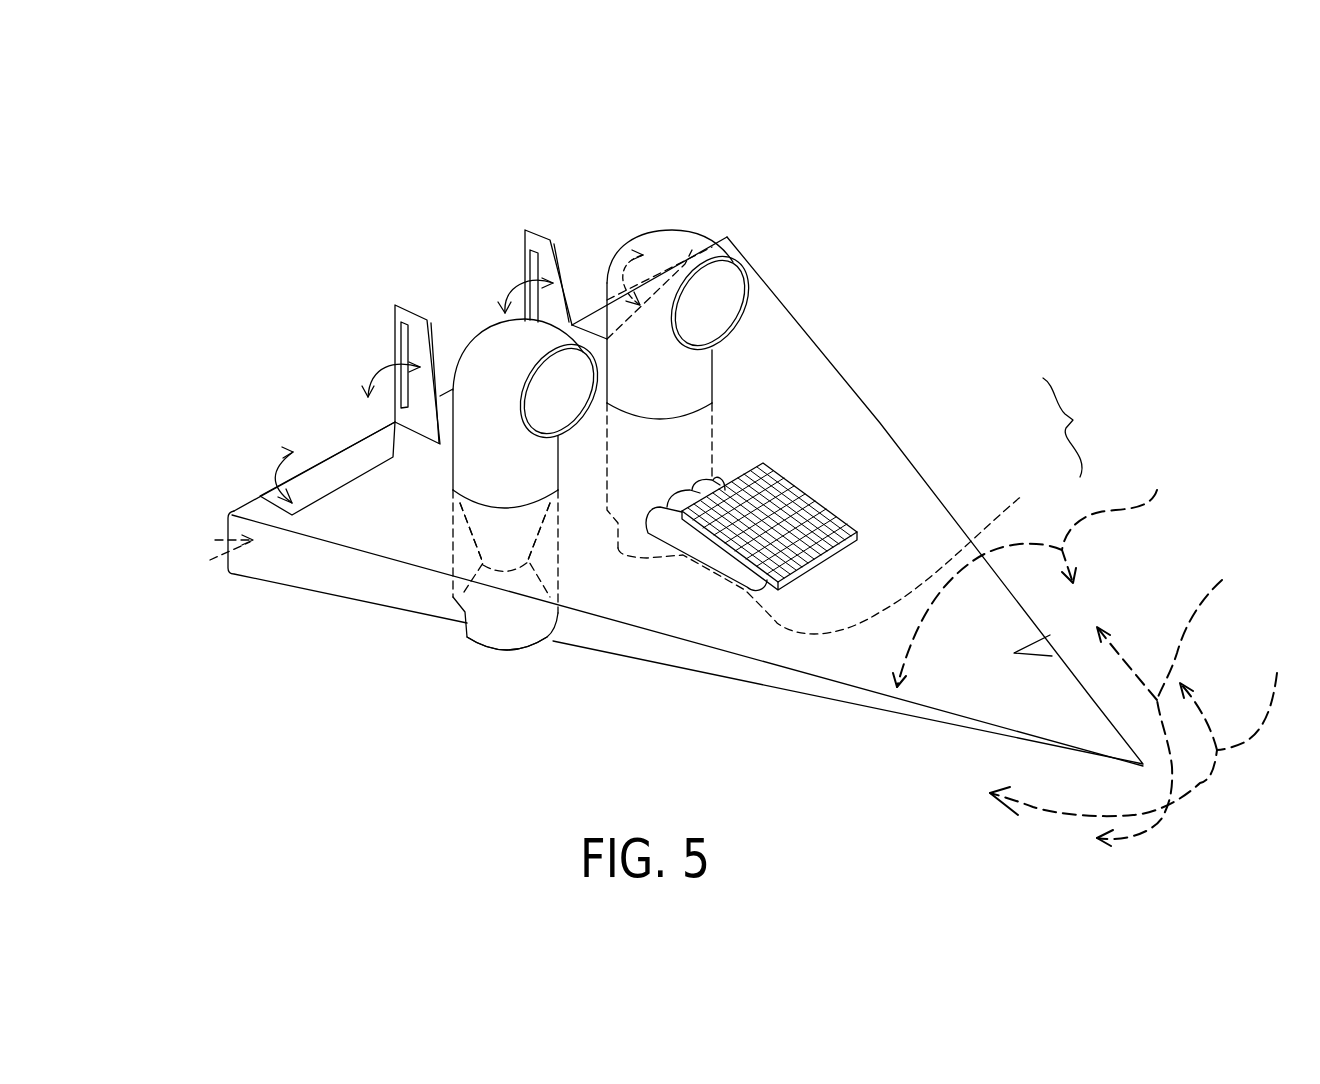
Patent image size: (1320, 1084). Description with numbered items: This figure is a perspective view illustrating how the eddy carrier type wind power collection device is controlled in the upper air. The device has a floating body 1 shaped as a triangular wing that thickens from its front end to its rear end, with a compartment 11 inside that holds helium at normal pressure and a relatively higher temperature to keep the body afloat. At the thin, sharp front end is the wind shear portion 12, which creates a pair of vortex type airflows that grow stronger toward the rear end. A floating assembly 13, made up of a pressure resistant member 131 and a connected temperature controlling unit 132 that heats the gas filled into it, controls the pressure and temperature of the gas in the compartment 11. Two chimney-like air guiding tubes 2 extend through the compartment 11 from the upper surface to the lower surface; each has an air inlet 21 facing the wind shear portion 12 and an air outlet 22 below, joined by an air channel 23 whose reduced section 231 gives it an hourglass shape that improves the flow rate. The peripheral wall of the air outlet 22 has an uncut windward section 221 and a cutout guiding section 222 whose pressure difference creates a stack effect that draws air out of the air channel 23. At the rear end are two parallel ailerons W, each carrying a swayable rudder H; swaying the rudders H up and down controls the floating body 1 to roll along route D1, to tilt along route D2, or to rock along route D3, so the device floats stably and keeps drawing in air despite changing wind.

The floating body 1 is at (787, 690).
The compartment 11 is at (213, 545).
The wind shear portion 12 is at (1050, 635).
The floating assembly 13 is at (1073, 427).
The pressure resistant member 131 is at (842, 549).
The temperature controlling unit 132 is at (817, 503).
The air guiding tube 2 is at (483, 310).
The air inlet 21 is at (558, 372).
The air outlet 22 is at (465, 628).
The windward section 221 is at (527, 641).
The guiding section 222 is at (447, 585).
The air channel 23 is at (478, 392).
The reduced section 231 is at (392, 493).
The rudder H is at (332, 473).
The aileron W is at (395, 307).
The route D1 is at (1034, 572).
The route D2 is at (1176, 698).
The route D3 is at (1142, 725).